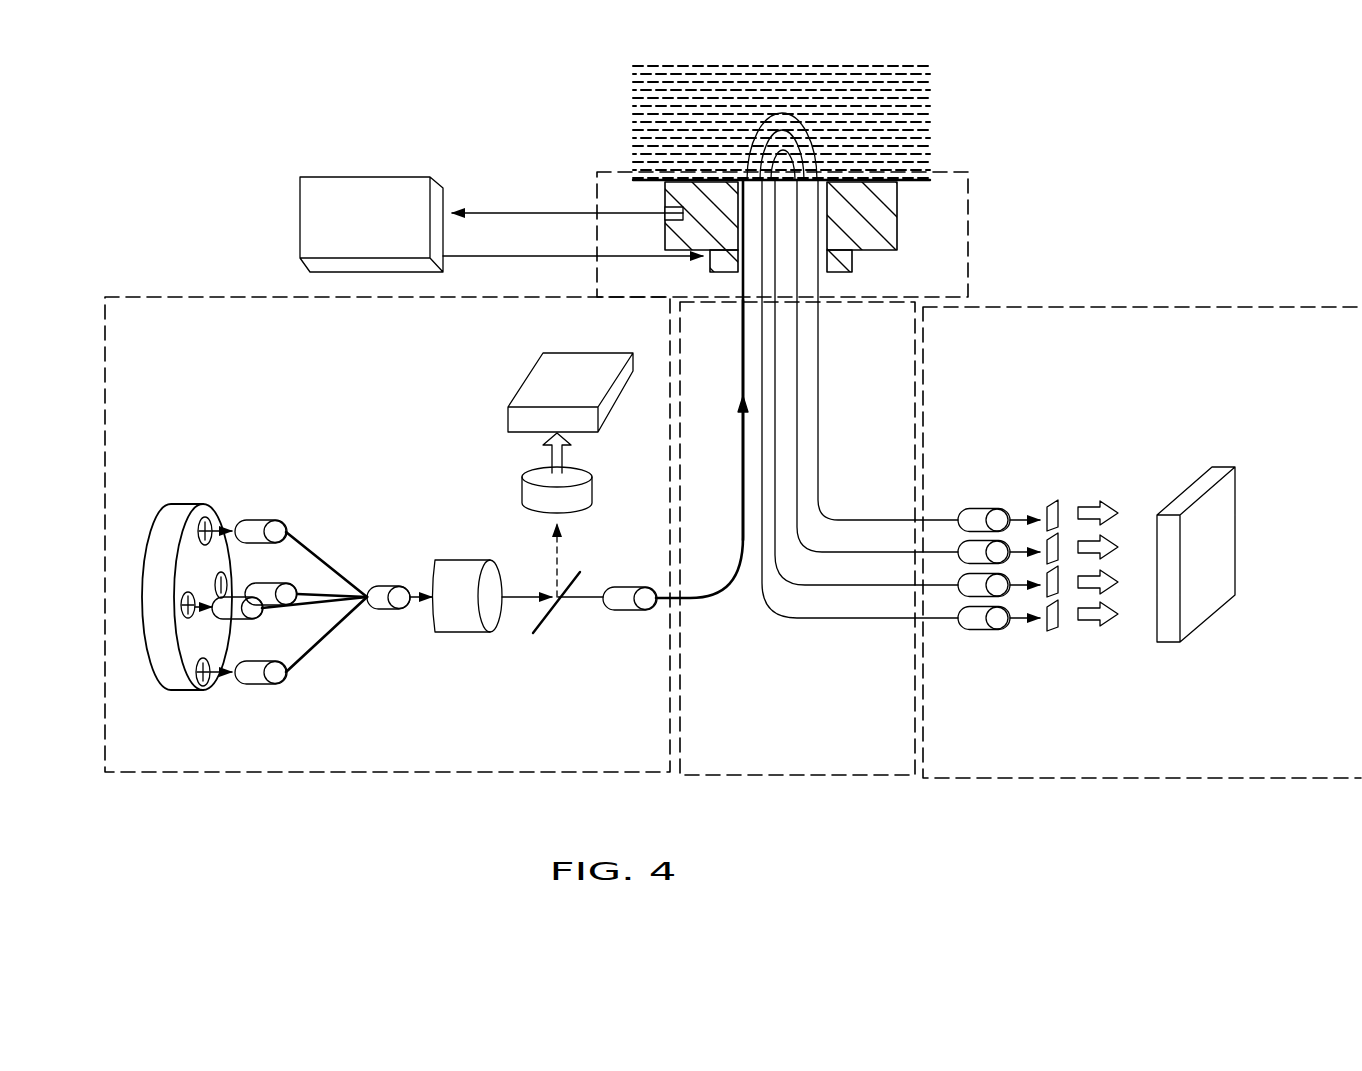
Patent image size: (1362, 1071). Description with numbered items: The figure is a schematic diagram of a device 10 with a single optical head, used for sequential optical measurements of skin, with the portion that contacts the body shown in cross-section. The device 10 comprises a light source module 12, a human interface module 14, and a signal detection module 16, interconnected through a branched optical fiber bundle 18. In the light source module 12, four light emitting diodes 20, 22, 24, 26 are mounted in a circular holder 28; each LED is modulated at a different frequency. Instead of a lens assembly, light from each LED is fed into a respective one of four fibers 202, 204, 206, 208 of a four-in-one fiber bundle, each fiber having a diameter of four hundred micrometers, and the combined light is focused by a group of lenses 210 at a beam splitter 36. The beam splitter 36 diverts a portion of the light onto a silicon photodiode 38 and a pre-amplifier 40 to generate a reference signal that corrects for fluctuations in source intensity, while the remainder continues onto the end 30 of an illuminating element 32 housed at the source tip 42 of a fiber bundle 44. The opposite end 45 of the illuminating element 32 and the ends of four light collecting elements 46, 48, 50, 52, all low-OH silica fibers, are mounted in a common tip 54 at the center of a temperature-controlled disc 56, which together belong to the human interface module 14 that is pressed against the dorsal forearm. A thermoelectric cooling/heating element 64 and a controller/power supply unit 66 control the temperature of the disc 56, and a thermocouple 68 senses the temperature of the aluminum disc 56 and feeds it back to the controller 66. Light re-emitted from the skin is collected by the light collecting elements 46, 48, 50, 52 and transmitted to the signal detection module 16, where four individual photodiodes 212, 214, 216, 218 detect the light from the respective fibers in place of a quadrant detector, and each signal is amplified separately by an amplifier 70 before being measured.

The device 10 is at (1137, 180).
The light source module 12 is at (472, 757).
The human interface module 14 is at (937, 233).
The signal detection module 16 is at (1155, 758).
The branched optical fiber bundle 18 is at (828, 758).
The light emitting diode 20 is at (211, 526).
The light emitting diode 22 is at (226, 580).
The light emitting diode 24 is at (206, 686).
The light emitting diode 26 is at (187, 618).
The circular holder 28 is at (172, 553).
The end of illuminating element 30 is at (600, 608).
The illuminating element 32 is at (707, 589).
The beam splitter 36 is at (557, 608).
The silicon photodiode 38 is at (537, 503).
The pre-amplifier 40 is at (548, 389).
The source tip 42 is at (637, 591).
The fiber bundle 44 is at (857, 446).
The end of illuminating element 45 is at (750, 178).
The light collecting element 46 is at (813, 621).
The light collecting element 48 is at (868, 590).
The light collecting element 50 is at (814, 513).
The light collecting element 52 is at (858, 521).
The common tip 54 is at (748, 178).
The temperature-controlled disc 56 is at (885, 230).
The thermoelectric cooling/heating element 64 is at (856, 258).
The controller/power supply unit 66 is at (368, 197).
The thermocouple 68 is at (668, 212).
The amplifier 70 is at (1214, 529).
The fiber 202 is at (279, 532).
The fiber 204 is at (314, 554).
The fiber 206 is at (307, 667).
The fiber 208 is at (313, 606).
The group of lenses 210 is at (468, 573).
The photodiode 212 is at (1050, 633).
The photodiode 214 is at (1052, 596).
The photodiode 216 is at (1058, 541).
The photodiode 218 is at (1053, 500).